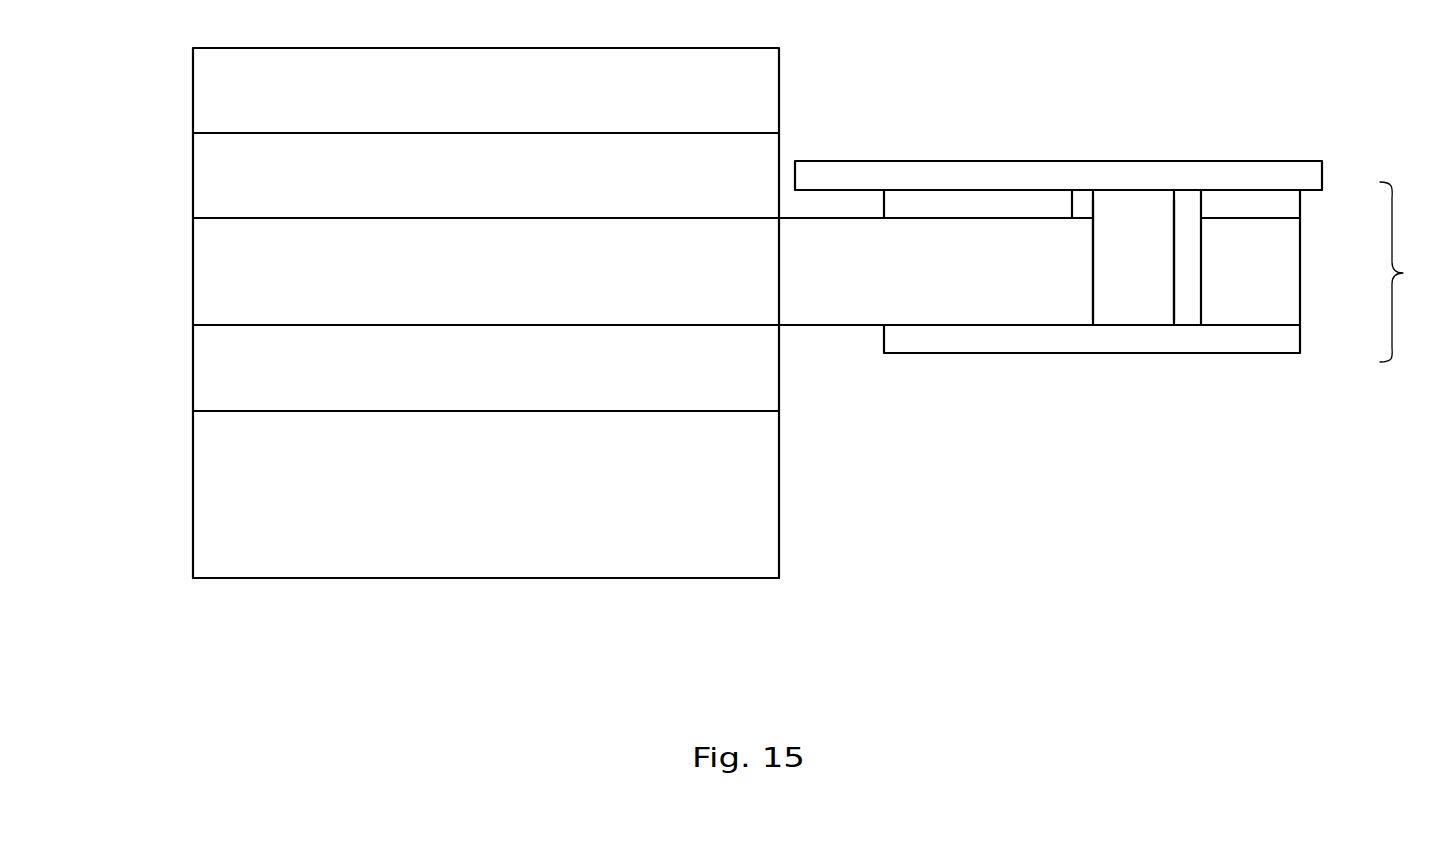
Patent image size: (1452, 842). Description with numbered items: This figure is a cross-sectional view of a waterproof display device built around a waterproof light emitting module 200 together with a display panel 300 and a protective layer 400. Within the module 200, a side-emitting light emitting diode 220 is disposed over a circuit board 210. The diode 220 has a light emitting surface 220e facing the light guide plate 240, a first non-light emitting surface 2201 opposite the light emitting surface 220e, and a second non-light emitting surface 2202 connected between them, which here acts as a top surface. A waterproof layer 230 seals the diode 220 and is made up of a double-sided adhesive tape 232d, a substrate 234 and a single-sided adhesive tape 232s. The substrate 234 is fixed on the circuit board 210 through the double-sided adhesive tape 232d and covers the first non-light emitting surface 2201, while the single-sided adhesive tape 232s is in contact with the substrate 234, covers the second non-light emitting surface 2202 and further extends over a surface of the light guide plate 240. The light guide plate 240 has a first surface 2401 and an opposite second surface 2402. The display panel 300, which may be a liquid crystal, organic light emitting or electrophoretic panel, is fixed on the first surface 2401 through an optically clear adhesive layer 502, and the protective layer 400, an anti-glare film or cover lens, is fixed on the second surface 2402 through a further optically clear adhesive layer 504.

The waterproof light emitting module 200 is at (1333, 93).
The circuit board 210 is at (1186, 180).
The light emitting diode 220 is at (1112, 200).
The light emitting surface 220e is at (1092, 282).
The first non-light emitting surface 2201 is at (1178, 282).
The second non-light emitting surface 2202 is at (1126, 328).
The waterproof layer 230 is at (1416, 272).
The double-sided adhesive tape 232d is at (943, 200).
The single-sided adhesive tape 232s is at (1293, 342).
The substrate 234 is at (1293, 275).
The light guide plate 240 is at (832, 315).
The first surface 2401 is at (283, 326).
The second surface 2402 is at (283, 218).
The display panel 300 is at (205, 521).
The protective layer 400 is at (205, 106).
The adhesive layer 502 is at (205, 399).
The adhesive layer 504 is at (205, 161).